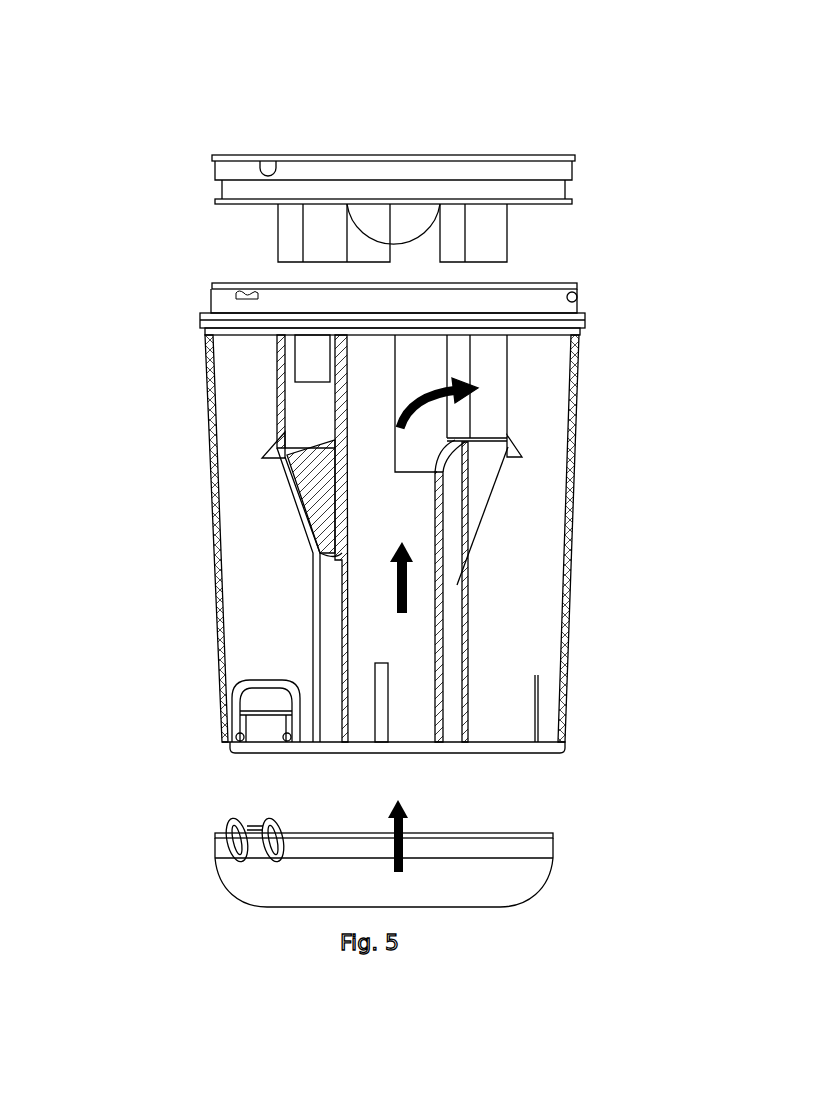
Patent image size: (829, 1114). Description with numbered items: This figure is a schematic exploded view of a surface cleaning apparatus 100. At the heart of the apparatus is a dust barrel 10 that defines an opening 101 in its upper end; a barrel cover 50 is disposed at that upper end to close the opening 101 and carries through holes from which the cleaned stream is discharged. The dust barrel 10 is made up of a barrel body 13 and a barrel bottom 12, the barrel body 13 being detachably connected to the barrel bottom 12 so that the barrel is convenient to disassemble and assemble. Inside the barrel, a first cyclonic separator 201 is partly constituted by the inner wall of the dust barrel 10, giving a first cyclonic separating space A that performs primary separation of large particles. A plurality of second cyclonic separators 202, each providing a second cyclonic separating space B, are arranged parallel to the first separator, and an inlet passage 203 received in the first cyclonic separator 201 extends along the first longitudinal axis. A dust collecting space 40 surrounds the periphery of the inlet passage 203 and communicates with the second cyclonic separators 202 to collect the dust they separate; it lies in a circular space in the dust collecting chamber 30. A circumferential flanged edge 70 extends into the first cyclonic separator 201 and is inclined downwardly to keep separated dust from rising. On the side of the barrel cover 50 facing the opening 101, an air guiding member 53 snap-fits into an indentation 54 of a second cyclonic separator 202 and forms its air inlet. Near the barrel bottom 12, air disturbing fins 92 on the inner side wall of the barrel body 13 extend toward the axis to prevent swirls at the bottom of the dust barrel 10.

The surface cleaning apparatus 100 is at (332, 80).
The barrel cover 50 is at (425, 157).
The air guiding member 53 is at (497, 220).
The indentation 54 is at (312, 355).
The opening 101 is at (537, 283).
The dust barrel 10 is at (217, 620).
The second cyclonic separating space B is at (297, 415).
The second cyclonic separator 202 is at (277, 450).
The first cyclonic separating space A is at (270, 488).
The inlet passage 203 is at (240, 680).
The first cyclonic separator 201 is at (518, 388).
The circumferential flanged edge 70 is at (520, 443).
The dust collecting space 40 is at (465, 570).
The dust collecting chamber 30 is at (512, 608).
The barrel body 13 is at (537, 674).
The air disturbing fins 92 is at (552, 702).
The barrel bottom 12 is at (535, 872).